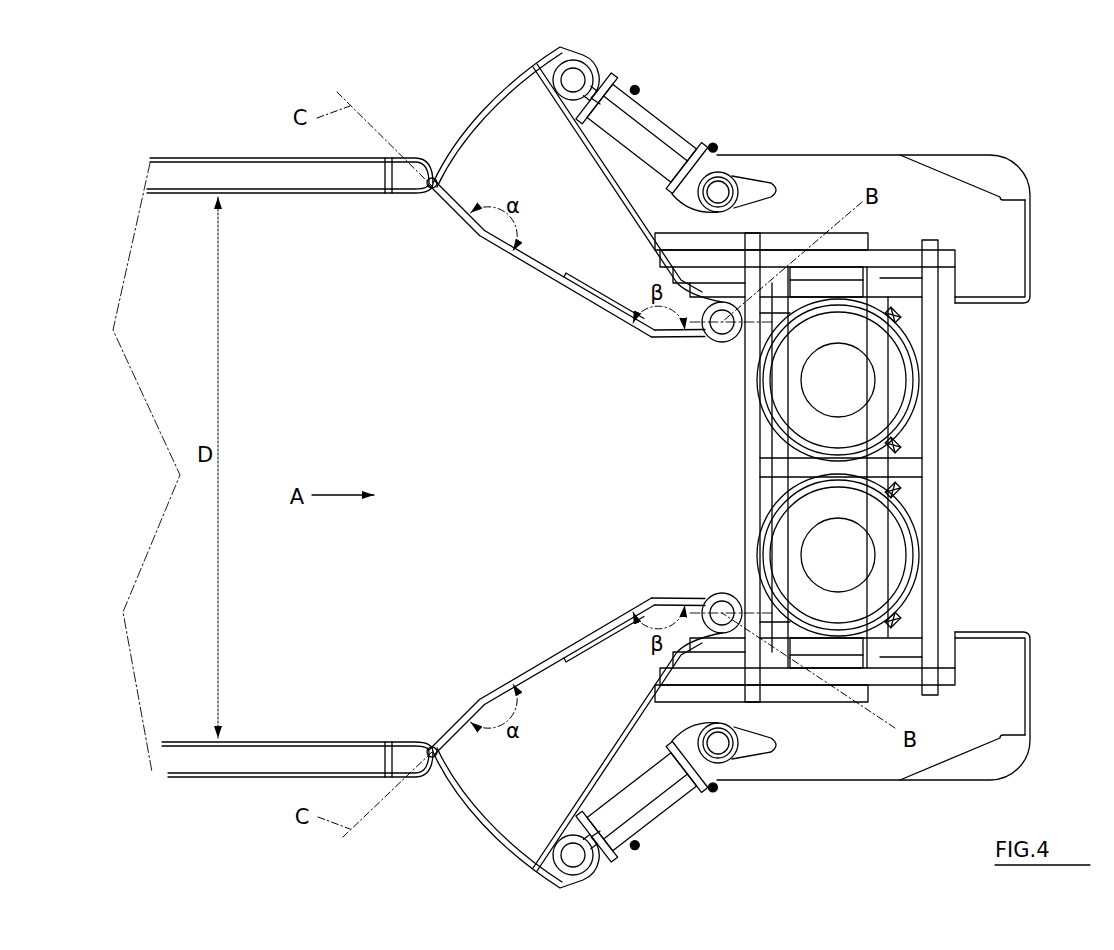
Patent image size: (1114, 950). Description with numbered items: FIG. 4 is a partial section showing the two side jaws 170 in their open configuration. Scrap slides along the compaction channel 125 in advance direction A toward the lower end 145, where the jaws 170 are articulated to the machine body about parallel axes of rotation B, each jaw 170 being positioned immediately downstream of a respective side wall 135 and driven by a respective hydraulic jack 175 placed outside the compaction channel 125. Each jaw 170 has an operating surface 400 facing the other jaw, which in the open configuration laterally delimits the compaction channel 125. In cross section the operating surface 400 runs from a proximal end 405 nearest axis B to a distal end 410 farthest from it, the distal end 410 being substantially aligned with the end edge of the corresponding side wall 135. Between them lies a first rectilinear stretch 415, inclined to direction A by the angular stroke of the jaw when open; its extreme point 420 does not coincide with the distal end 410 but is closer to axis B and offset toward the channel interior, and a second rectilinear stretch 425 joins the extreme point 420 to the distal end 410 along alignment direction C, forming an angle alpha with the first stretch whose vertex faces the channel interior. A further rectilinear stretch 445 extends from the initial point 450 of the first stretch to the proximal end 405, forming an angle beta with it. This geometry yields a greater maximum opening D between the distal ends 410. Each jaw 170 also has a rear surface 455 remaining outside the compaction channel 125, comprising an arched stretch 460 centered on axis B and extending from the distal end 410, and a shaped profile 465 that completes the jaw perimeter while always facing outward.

The compaction channel 125 is at (300, 445).
The side wall 135 is at (255, 172).
The lower end 145 is at (857, 488).
The side jaw 170 is at (558, 193).
The hydraulic jack 175 is at (680, 138).
The operating surface 400 is at (557, 303).
The proximal end 405 is at (724, 343).
The distal end 410 is at (428, 192).
The first rectilinear stretch 415 is at (600, 300).
The extreme point 420 is at (536, 468).
The second rectilinear stretch 425 is at (455, 206).
The further rectilinear stretch 445 is at (722, 270).
The initial point 450 is at (690, 338).
The rear surface 455 is at (607, 167).
The arched stretch 460 is at (475, 117).
The shaped profile 465 is at (727, 172).